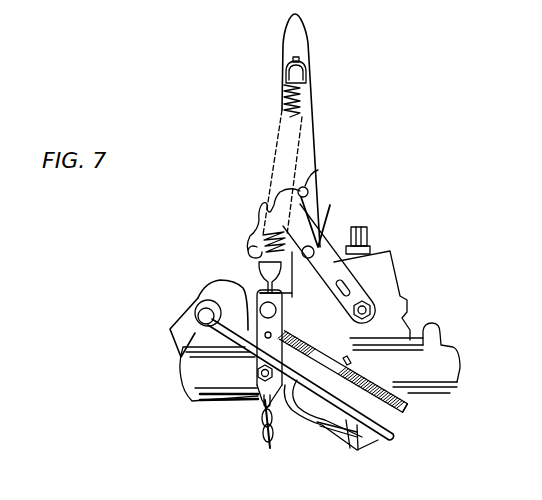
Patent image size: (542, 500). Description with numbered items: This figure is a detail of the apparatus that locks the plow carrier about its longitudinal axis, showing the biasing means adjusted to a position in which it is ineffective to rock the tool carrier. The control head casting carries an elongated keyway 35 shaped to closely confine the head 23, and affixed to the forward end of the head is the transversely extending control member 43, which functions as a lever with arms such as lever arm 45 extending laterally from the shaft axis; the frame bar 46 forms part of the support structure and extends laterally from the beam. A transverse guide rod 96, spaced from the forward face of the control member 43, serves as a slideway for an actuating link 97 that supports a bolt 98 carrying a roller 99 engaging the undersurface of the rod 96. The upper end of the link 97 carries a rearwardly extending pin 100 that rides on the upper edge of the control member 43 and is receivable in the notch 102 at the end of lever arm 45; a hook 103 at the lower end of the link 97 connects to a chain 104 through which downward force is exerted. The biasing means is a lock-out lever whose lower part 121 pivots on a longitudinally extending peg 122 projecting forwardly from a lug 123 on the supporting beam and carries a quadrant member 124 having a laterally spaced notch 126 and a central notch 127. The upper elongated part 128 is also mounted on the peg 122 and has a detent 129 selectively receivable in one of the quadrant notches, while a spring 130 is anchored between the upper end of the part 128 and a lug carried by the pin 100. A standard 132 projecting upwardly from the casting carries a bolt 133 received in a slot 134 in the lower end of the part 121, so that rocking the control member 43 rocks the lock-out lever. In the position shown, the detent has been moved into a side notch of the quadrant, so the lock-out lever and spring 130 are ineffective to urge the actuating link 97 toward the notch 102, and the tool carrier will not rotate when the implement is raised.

The upper elongated part 128 is at (311, 53).
The spring 130 is at (283, 108).
The central notch 127 is at (269, 206).
The quadrant member 124 is at (326, 173).
The detent 129 is at (309, 191).
The lower part 121 is at (330, 220).
The peg 122 is at (331, 240).
The slot 134 is at (343, 278).
The lug 123 is at (350, 291).
The bolt 133 is at (373, 307).
The standard 132 is at (368, 322).
The actuating link 97 is at (339, 299).
The control member 43 is at (405, 408).
The notch 126 is at (257, 247).
The notch 102 is at (245, 290).
The pin 100 is at (276, 308).
The bolt 98 is at (260, 371).
The hook 103 is at (260, 407).
The chain 104 is at (263, 440).
The guide rod 96 is at (394, 425).
The frame bar 46 is at (184, 380).
The lever arm 45 is at (232, 360).
The roller 99 is at (227, 398).
The keyway 35 is at (317, 421).
The head 23 is at (358, 440).